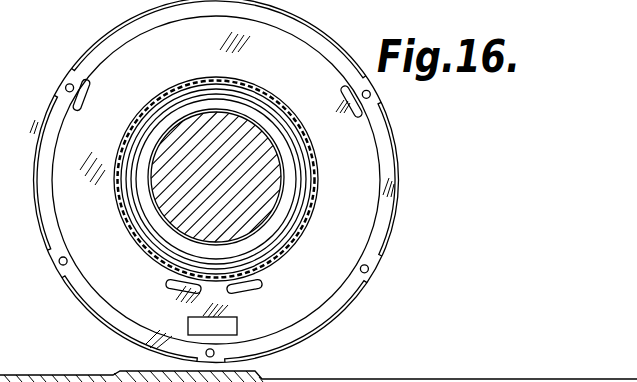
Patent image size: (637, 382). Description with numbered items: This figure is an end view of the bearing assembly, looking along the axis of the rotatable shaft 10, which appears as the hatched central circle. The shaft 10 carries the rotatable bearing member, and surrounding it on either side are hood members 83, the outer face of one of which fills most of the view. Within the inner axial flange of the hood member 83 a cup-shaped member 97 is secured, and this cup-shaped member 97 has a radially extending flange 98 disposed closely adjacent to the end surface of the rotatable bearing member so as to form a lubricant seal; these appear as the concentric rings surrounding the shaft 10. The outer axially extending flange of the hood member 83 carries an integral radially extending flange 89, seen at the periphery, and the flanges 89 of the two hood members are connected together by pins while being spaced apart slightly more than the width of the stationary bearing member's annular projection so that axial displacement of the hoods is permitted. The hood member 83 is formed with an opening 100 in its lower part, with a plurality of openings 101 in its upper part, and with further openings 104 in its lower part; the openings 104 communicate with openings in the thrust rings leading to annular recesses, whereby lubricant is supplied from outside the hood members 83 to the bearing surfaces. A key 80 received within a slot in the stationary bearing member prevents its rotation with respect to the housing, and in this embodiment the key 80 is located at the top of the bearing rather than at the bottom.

The hood member 83 is at (303, 53).
The radially extending flange 89 is at (380, 232).
The openings 101 is at (90, 87).
The cup-shaped member 97 is at (123, 204).
The radially extending flange 98 is at (152, 223).
The rotatable shaft 10 is at (266, 201).
The openings 104 is at (168, 287).
The opening 100 is at (237, 324).
The key 80 is at (167, 376).